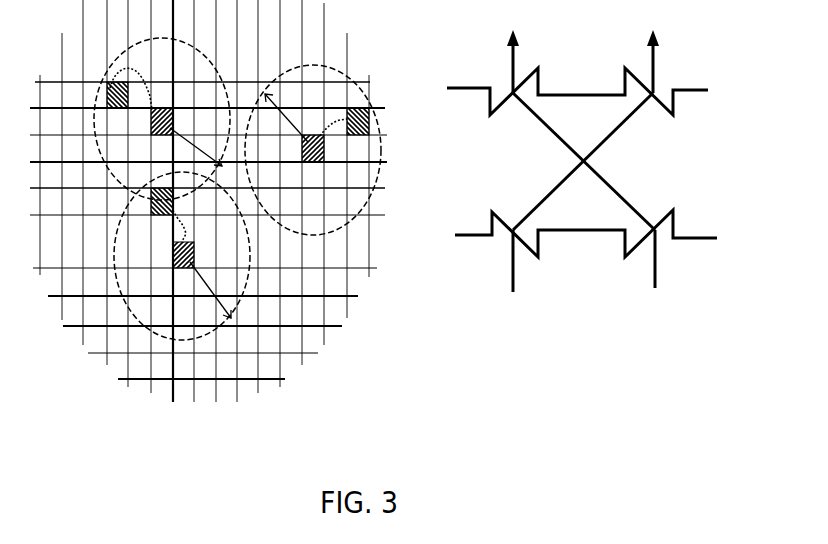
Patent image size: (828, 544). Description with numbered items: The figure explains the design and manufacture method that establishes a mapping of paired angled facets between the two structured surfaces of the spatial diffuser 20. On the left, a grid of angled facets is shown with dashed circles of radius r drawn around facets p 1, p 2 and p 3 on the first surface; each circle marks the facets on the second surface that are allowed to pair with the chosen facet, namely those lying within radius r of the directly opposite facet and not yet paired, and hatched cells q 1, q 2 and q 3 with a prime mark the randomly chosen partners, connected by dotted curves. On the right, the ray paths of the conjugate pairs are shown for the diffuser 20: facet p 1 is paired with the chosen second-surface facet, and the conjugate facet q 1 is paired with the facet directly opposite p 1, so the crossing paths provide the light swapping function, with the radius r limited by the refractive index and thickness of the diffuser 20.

The spatial diffuser 20 is at (665, 176).
The first search circle of radius r around pixel p1 with matched pixel q1' 1 is at (162, 119).
The second search circle of radius r around pixel p2 with matched pixel q2' 2 is at (182, 256).
The third search circle of radius r around pixel p3 with matched pixel q3' 3 is at (313, 150).